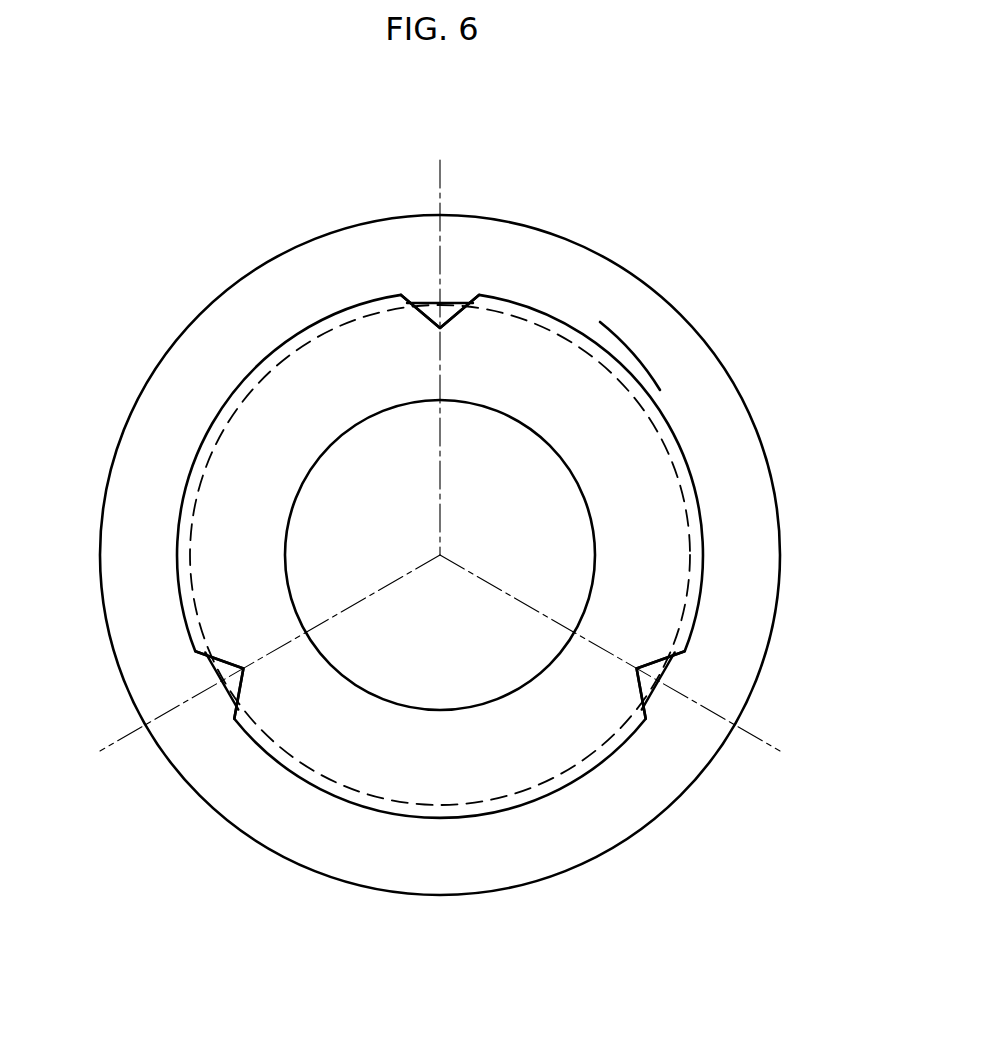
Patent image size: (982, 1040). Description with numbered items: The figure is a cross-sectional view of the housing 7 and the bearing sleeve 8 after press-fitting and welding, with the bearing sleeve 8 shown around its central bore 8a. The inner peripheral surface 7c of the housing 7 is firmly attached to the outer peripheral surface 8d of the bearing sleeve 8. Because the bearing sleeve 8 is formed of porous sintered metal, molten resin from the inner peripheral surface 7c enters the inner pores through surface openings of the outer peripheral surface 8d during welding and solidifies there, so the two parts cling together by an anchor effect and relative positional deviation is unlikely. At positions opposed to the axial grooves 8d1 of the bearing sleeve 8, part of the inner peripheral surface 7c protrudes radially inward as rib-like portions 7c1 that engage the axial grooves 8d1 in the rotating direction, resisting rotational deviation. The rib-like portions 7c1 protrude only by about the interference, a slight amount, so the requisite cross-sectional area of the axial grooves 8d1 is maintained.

The housing 7 is at (188, 320).
The inner peripheral surface of the housing 7c is at (199, 441).
The rib-like portions 7c1 is at (410, 306).
The bearing sleeve 8 is at (678, 437).
The bore of inner member 8a is at (586, 509).
The outer peripheral surface of the bearing sleeve 8d is at (633, 373).
The axial grooves 8d1 is at (445, 303).